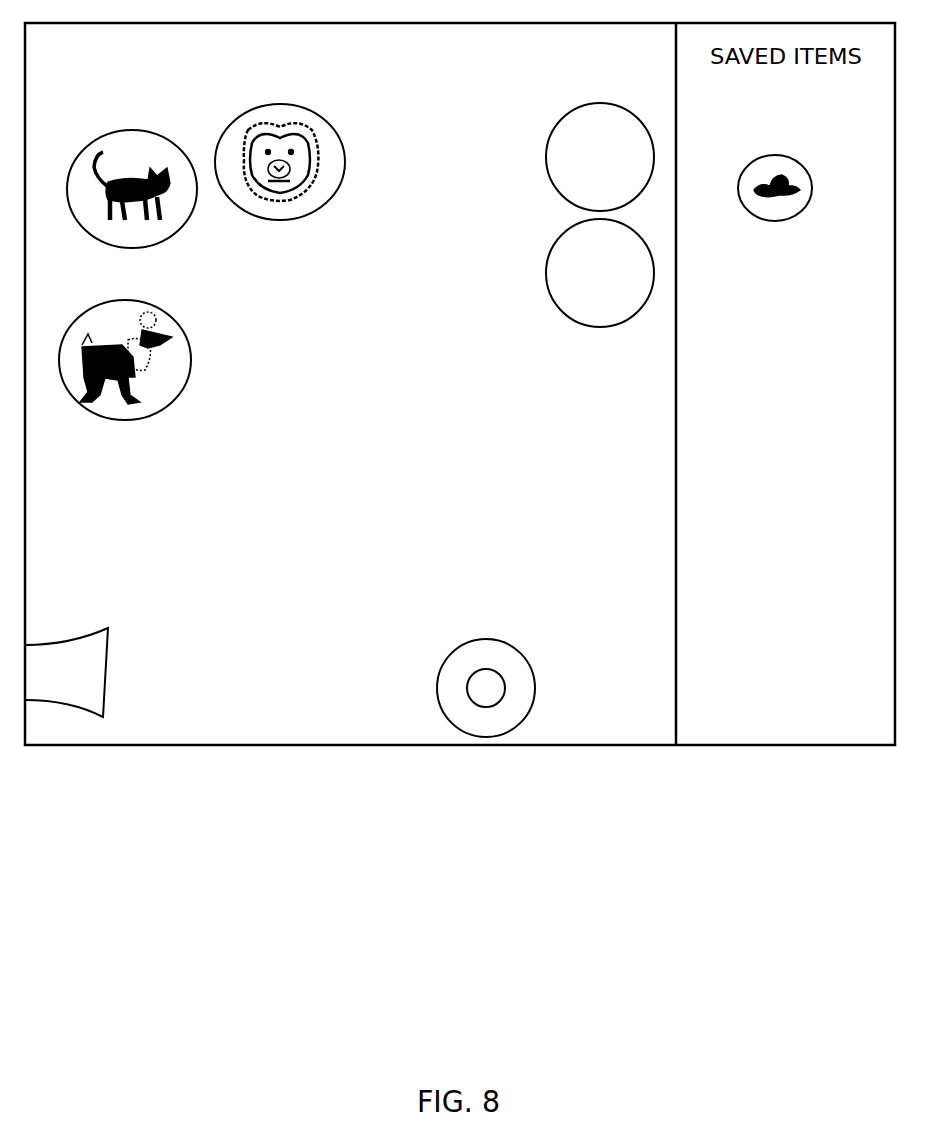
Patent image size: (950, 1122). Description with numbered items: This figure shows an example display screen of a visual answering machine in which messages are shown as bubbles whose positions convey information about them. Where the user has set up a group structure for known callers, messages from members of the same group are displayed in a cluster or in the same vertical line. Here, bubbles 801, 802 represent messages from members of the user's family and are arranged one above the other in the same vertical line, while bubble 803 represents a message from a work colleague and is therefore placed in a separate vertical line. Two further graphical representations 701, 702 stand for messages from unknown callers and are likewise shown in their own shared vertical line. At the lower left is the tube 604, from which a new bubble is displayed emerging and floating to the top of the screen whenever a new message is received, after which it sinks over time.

The bubble 801 is at (130, 130).
The bubble 802 is at (192, 350).
The bubble 803 is at (336, 124).
The graphical representation 701 is at (547, 142).
The graphical representation 702 is at (547, 277).
The tube 604 is at (70, 638).